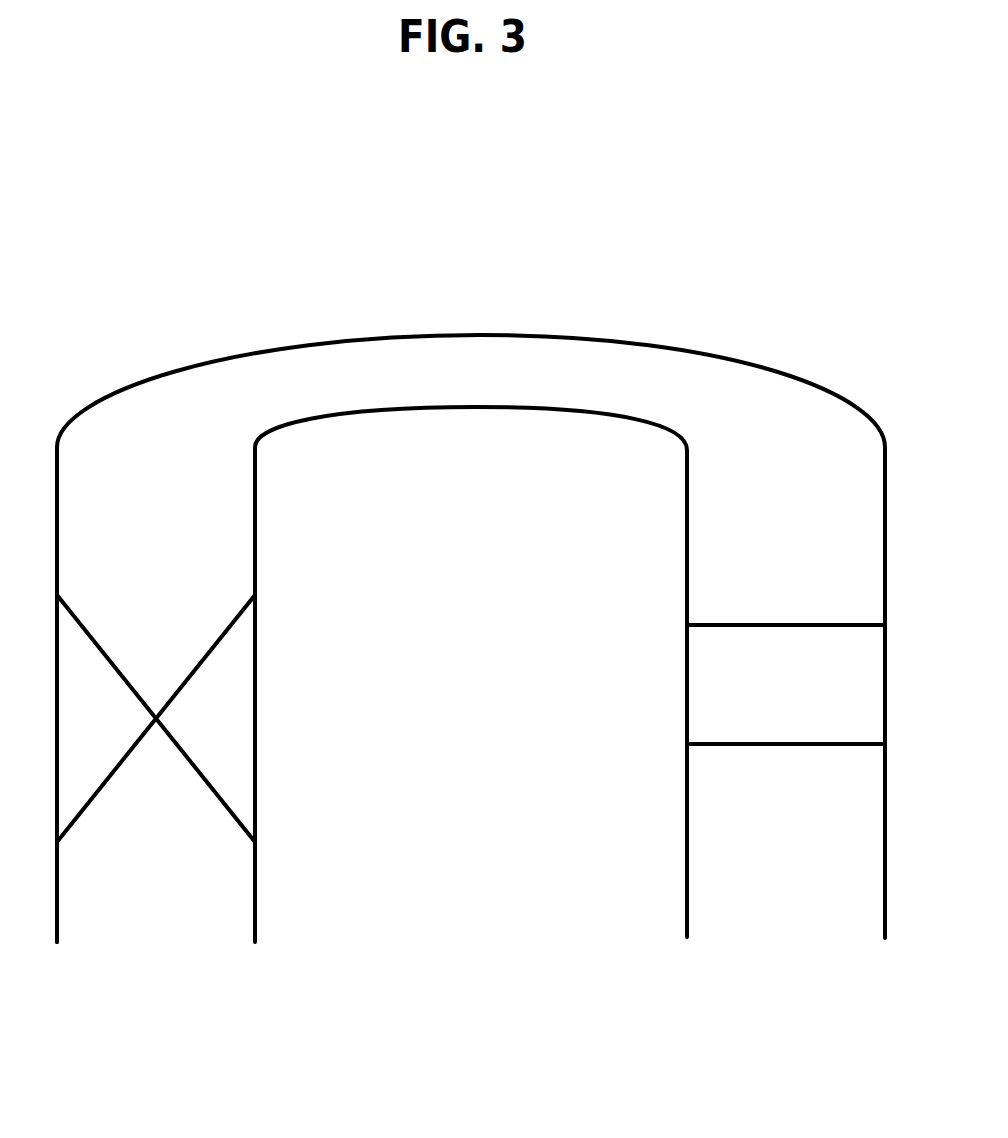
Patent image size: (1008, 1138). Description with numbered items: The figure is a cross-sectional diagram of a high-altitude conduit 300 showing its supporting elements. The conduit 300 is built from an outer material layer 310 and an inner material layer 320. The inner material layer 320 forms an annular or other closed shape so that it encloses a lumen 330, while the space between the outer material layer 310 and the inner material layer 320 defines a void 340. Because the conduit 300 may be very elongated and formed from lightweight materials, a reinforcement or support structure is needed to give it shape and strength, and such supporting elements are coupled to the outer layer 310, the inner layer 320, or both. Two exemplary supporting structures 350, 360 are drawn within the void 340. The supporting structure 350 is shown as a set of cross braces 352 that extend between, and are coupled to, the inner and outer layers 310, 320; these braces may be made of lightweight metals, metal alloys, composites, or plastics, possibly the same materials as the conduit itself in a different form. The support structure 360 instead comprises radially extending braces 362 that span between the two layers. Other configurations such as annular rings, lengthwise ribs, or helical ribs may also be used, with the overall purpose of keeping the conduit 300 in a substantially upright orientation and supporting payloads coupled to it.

The conduit 300 is at (735, 313).
The outer material layer 310 is at (57, 912).
The inner material layer 320 is at (250, 793).
The lumen 330 is at (568, 577).
The void 340 is at (165, 561).
The supporting structure 350 is at (298, 677).
The cross braces 352 is at (228, 636).
The support structure 360 is at (658, 695).
The radially extending braces 362 is at (733, 746).